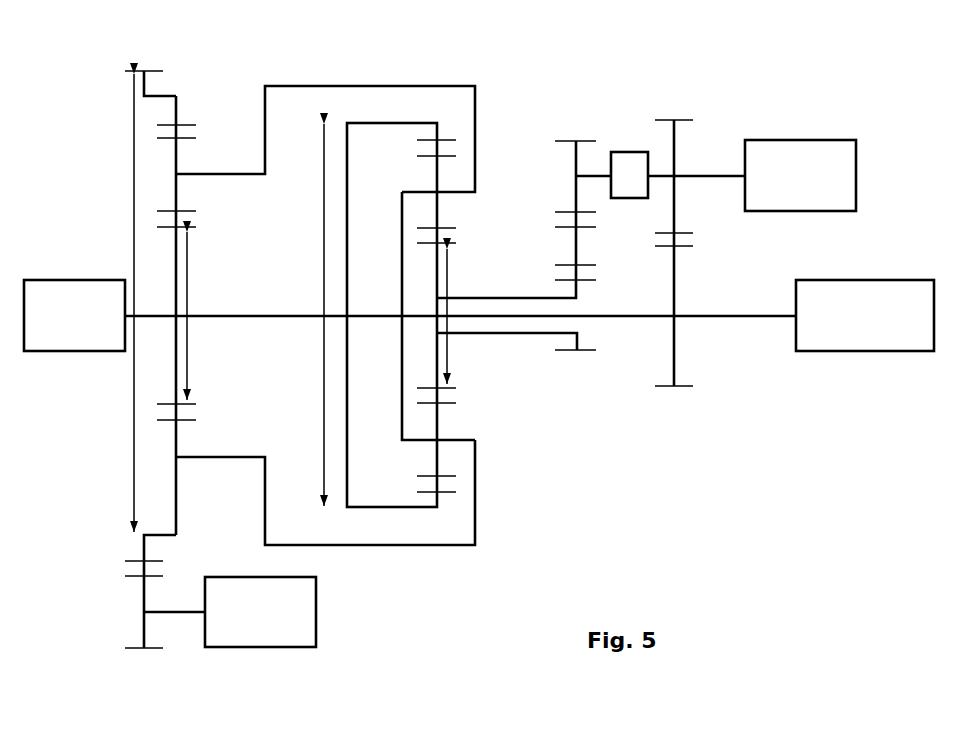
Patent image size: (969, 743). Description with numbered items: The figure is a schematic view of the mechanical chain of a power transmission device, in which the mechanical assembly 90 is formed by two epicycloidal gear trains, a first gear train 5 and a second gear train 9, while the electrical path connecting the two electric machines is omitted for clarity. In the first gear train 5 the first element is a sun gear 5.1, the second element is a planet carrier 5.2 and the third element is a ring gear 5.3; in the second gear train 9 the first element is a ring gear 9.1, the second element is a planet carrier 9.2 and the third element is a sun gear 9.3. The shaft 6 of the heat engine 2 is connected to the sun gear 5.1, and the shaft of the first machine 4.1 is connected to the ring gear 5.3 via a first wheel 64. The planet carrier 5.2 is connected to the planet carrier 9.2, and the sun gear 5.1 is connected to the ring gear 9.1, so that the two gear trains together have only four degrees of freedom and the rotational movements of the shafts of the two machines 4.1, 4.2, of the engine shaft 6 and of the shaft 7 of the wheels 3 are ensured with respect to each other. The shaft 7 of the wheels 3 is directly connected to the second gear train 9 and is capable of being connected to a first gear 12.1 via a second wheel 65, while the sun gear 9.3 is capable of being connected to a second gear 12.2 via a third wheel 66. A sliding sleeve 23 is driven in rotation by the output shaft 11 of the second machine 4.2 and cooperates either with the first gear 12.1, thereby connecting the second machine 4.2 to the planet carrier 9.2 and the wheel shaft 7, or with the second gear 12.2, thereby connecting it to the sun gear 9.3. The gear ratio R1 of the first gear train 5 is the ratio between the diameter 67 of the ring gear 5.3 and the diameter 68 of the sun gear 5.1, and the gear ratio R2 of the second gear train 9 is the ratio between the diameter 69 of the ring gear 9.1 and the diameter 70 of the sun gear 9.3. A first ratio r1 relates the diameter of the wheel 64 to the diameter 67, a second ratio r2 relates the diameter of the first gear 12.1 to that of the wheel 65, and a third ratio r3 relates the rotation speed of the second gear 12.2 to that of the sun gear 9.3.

The heat engine 2 is at (88, 281).
The wheels 3 is at (851, 282).
The first machine 4.1 is at (270, 647).
The second machine 4.2 is at (803, 141).
The first gear train 5 is at (112, 224).
The sun gear of the first gear train 5.1 is at (178, 344).
The planet carrier of the first gear train 5.2 is at (370, 86).
The ring gear of the first gear train 5.3 is at (167, 95).
The shaft of the heat engine 6 is at (162, 312).
The shaft of the wheels 7 is at (742, 318).
The second gear train 9 is at (478, 265).
The ring gear of the second gear train 9.1 is at (349, 146).
The planet carrier of the second gear train 9.2 is at (401, 337).
The sun gear of the second gear train 9.3 is at (530, 335).
The output shaft of the second machine 11 is at (716, 176).
The first gear 12.1 is at (676, 205).
The second gear 12.2 is at (575, 153).
The sliding sleeve 23 is at (630, 155).
The first wheel 64 is at (143, 625).
The second wheel 65 is at (676, 281).
The third wheel 66 is at (572, 246).
The diameter of the ring gear 67 is at (134, 136).
The diameter of the sun gear 68 is at (190, 270).
The diameter of the ring gear 69 is at (323, 214).
The diameter of the sun gear 70 is at (446, 285).
The mechanical assembly 90 is at (477, 53).
The gear ratio of the first gear train R1 is at (202, 413).
The gear ratio of the second gear train R2 is at (462, 396).
The first ratio r1 is at (121, 568).
The second ratio r2 is at (674, 408).
The third ratio r3 is at (597, 273).